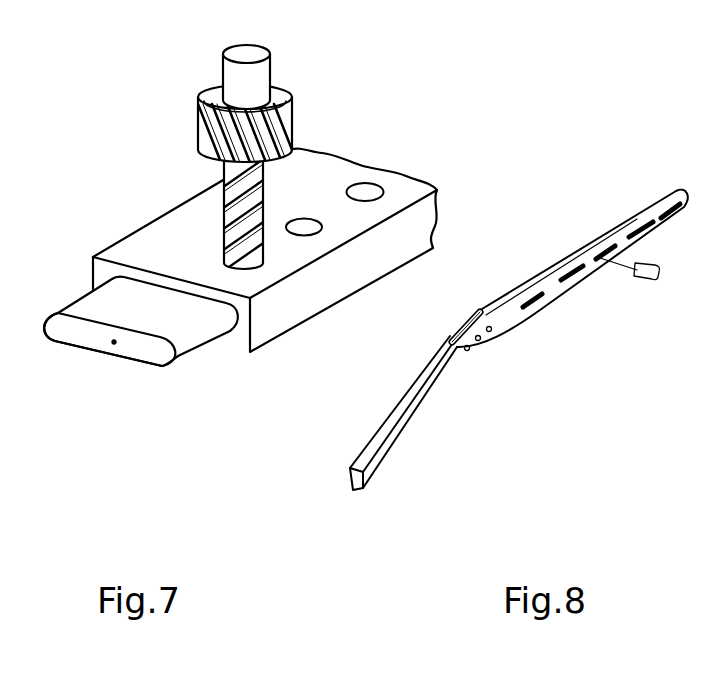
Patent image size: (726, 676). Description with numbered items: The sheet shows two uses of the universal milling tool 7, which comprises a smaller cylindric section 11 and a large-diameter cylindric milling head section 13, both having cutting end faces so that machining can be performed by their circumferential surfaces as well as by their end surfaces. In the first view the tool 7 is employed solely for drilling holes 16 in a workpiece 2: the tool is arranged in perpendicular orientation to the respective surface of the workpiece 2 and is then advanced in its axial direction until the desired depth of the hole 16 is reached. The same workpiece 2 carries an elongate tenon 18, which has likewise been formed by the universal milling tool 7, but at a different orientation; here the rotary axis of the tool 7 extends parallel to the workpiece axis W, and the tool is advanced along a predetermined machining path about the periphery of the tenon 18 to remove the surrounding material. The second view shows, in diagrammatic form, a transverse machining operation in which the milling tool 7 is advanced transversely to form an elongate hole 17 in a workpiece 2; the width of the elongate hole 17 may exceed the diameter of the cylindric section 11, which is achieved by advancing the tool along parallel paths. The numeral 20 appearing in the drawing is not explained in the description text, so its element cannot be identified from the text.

In FIG. 7, the workpiece 2 is at (145, 247).
In FIG. 7, the universal milling tool 7 is at (233, 187).
In FIG. 7, the cylindric section 11 is at (92, 327).
In FIG. 7, the large-diameter cylindric milling head section 13 is at (0, 151).
In FIG. 7, the holes 16 is at (367, 194).
In FIG. 7, the elongate tenon 18 is at (193, 338).
In FIG. 7, the workpiece axis W is at (128, 352).
In FIG. 8, the bent section of strip 20 is at (504, 317).
In FIG. 8, the elongate hole 17 is at (597, 250).